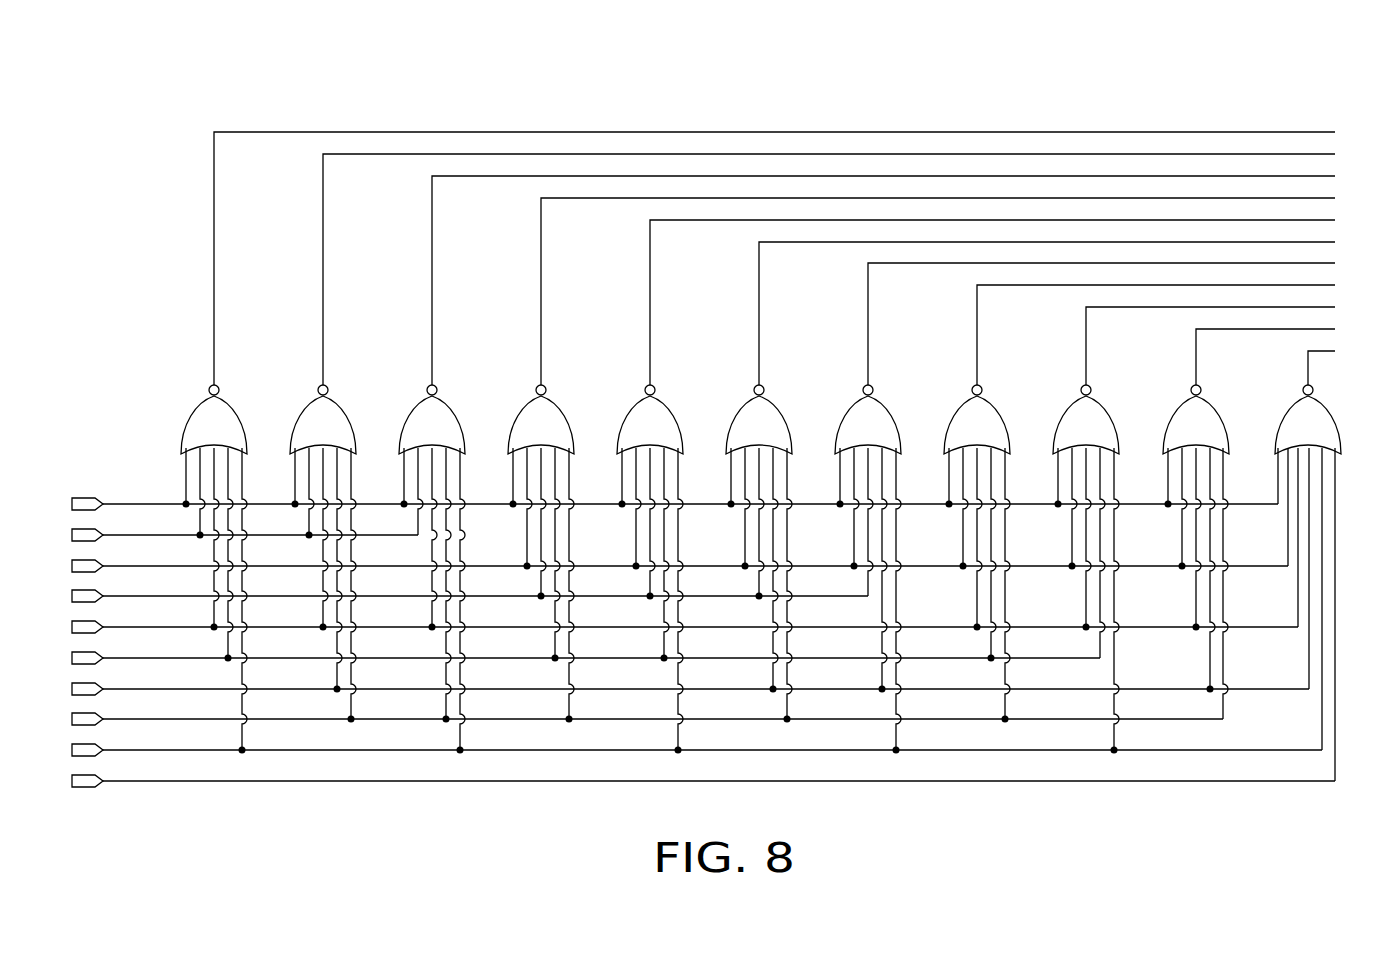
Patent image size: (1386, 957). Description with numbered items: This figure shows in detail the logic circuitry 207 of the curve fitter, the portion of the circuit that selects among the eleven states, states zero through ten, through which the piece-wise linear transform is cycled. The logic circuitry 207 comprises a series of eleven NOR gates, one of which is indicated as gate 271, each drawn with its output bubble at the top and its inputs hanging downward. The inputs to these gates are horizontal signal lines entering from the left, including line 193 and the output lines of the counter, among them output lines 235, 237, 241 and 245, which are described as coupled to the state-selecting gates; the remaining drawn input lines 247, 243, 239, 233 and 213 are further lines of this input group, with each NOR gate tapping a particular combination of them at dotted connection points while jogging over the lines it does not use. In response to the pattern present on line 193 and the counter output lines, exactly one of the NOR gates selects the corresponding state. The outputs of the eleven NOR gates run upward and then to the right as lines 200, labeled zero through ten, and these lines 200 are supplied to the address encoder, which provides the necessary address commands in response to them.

The line 193 is at (158, 502).
The input line 247 is at (122, 535).
The output line 245 is at (127, 563).
The input line 243 is at (130, 593).
The output line 241 is at (132, 625).
The input line 239 is at (135, 657).
The output line 237 is at (138, 687).
The output line 235 is at (138, 718).
The input line 233 is at (135, 748).
The input line 213 is at (132, 782).
The logic circuitry 207 is at (815, 126).
The lines 200 is at (1101, 126).
The NOR gate 271 is at (172, 418).